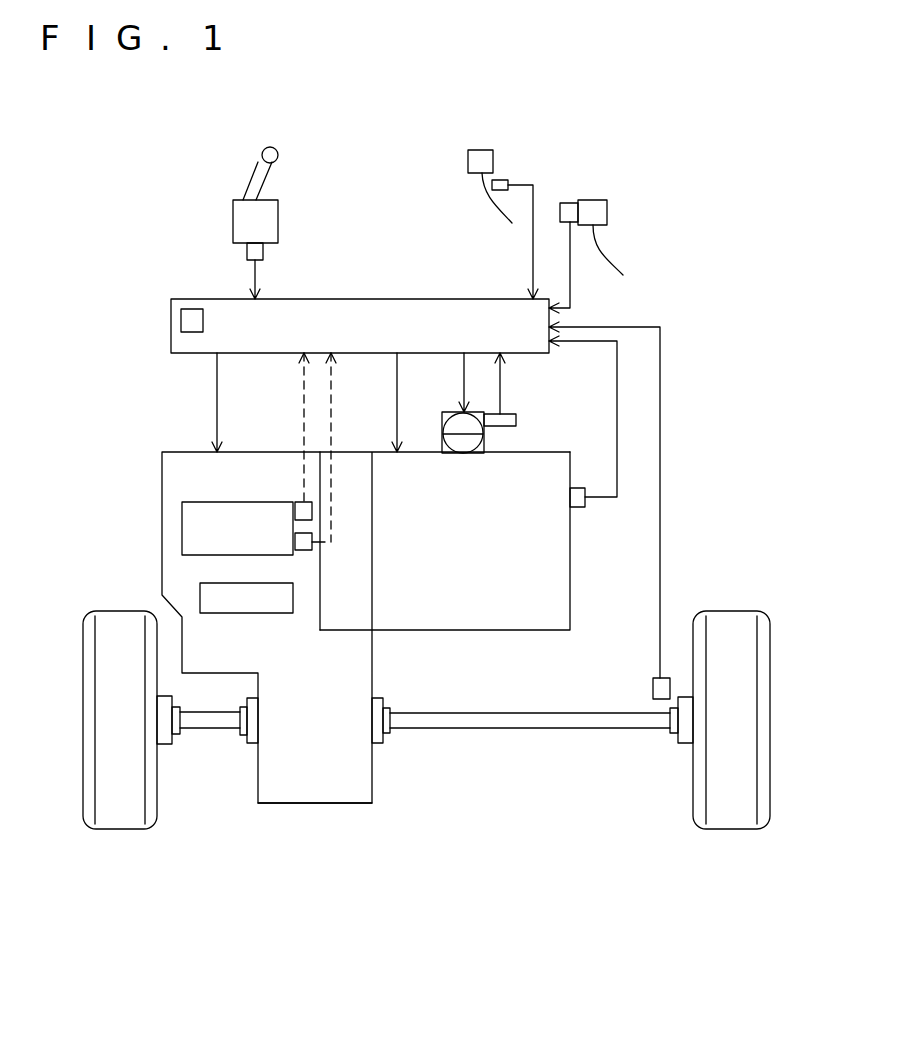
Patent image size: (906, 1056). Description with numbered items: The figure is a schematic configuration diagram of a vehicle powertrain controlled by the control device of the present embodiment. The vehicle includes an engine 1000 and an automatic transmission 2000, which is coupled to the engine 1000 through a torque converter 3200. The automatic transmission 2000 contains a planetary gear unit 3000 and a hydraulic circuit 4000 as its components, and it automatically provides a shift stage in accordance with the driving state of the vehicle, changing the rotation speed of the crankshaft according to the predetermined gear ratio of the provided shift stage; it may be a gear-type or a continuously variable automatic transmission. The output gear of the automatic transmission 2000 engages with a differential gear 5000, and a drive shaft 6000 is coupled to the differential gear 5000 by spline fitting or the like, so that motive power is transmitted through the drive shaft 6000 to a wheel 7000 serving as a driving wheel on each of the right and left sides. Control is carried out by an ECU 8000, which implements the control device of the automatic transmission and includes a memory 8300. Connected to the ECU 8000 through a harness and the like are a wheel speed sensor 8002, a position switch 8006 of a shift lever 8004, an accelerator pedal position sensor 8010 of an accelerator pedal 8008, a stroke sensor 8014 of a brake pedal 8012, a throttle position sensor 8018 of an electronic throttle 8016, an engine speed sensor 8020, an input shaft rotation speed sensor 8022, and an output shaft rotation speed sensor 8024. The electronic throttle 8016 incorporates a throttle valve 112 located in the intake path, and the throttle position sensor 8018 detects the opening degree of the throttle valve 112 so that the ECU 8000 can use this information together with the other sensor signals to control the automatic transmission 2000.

The engine 1000 is at (470, 631).
The automatic transmission 2000 is at (235, 452).
The planetary gear unit 3000 is at (182, 527).
The torque converter 3200 is at (347, 452).
The hydraulic circuit 4000 is at (238, 614).
The differential gear 5000 is at (313, 805).
The drive shaft 6000 is at (207, 730).
The wheel 7000 is at (115, 830).
The ECU 8000 is at (453, 299).
The wheel speed sensor 8002 is at (653, 682).
The shift lever 8004 is at (274, 170).
The position switch 8006 is at (247, 257).
The accelerator pedal 8008 is at (488, 200).
The accelerator pedal position sensor 8010 is at (502, 180).
The brake pedal 8012 is at (597, 232).
The stroke sensor 8014 is at (572, 203).
The electronic throttle 8016 is at (484, 446).
The throttle position sensor 8018 is at (516, 420).
The engine speed sensor 8020 is at (577, 507).
The input shaft rotation speed sensor 8022 is at (305, 502).
The output shaft rotation speed sensor 8024 is at (305, 550).
The memory 8300 is at (181, 325).
The throttle valve 112 is at (463, 453).